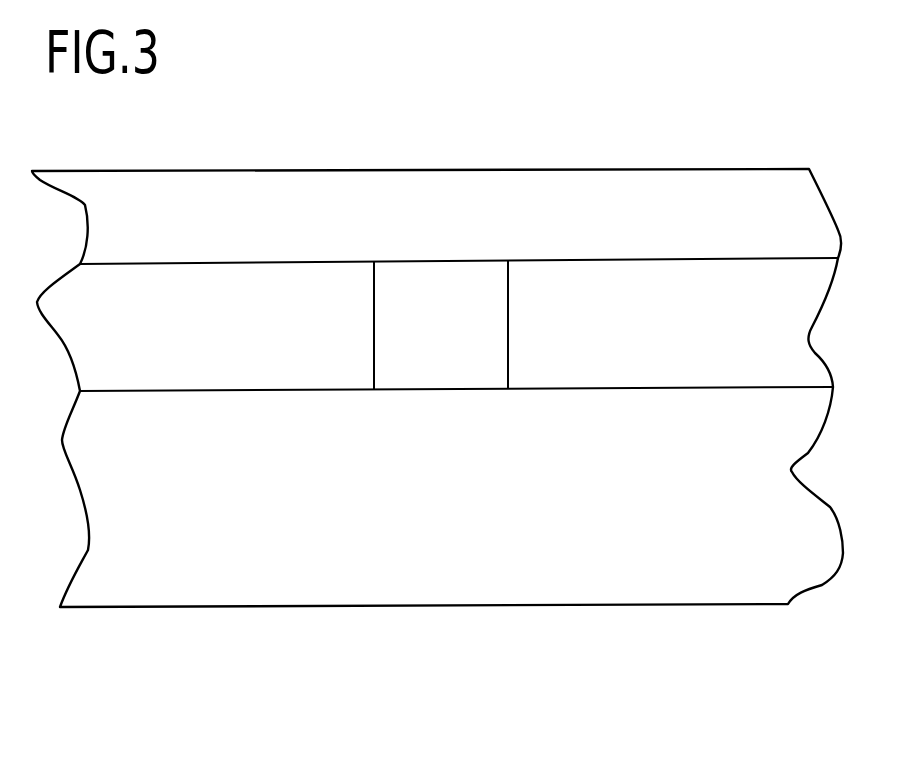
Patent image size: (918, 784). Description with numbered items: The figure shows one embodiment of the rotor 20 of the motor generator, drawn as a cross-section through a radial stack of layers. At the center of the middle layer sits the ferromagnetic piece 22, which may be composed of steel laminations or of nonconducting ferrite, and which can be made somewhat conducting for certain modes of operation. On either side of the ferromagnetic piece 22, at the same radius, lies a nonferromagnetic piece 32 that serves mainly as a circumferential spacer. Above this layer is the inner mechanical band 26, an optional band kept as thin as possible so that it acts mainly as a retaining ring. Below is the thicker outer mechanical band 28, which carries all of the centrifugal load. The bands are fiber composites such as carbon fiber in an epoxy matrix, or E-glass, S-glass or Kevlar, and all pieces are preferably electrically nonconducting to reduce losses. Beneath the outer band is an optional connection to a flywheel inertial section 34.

The rotor 20 is at (596, 147).
The ferromagnetic piece 22 is at (455, 328).
The inner mechanical band 26 is at (425, 233).
The outer mechanical band 28 is at (453, 534).
The nonferromagnetic piece 32 is at (674, 336).
The flywheel inertial section 34 is at (455, 683).